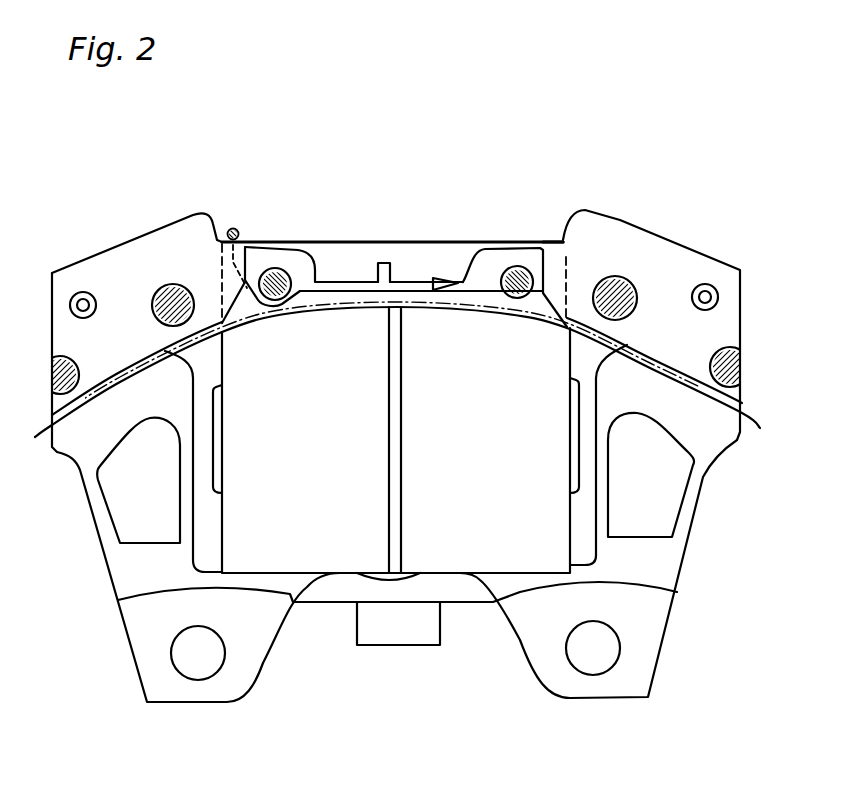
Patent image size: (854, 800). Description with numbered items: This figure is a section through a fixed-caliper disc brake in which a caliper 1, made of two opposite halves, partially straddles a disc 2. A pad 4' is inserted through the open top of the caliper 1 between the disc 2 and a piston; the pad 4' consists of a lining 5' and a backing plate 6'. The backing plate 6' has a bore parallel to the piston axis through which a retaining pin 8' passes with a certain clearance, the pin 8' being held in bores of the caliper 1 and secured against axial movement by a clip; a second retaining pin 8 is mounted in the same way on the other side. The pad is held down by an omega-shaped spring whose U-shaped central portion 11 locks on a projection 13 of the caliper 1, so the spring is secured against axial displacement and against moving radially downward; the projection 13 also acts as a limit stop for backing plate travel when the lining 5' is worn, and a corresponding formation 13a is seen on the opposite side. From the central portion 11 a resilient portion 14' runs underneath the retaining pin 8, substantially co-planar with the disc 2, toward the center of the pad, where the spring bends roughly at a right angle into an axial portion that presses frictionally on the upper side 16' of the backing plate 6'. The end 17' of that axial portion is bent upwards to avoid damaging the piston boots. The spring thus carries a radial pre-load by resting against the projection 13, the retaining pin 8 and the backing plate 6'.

The caliper 1 is at (150, 253).
The disc 2 is at (645, 358).
The pad 4' is at (397, 609).
The lining 5' is at (397, 437).
The backing plate 6' is at (488, 231).
The retaining pin 8 is at (270, 317).
The retaining pin 8' is at (509, 235).
The U-shaped central portion 11 is at (236, 229).
The projection 13 is at (238, 250).
The bracket end 13a is at (543, 242).
The resilient portion 14' is at (394, 243).
The upper side of backing plate 16' is at (410, 235).
The end of axial portion 17' is at (381, 224).